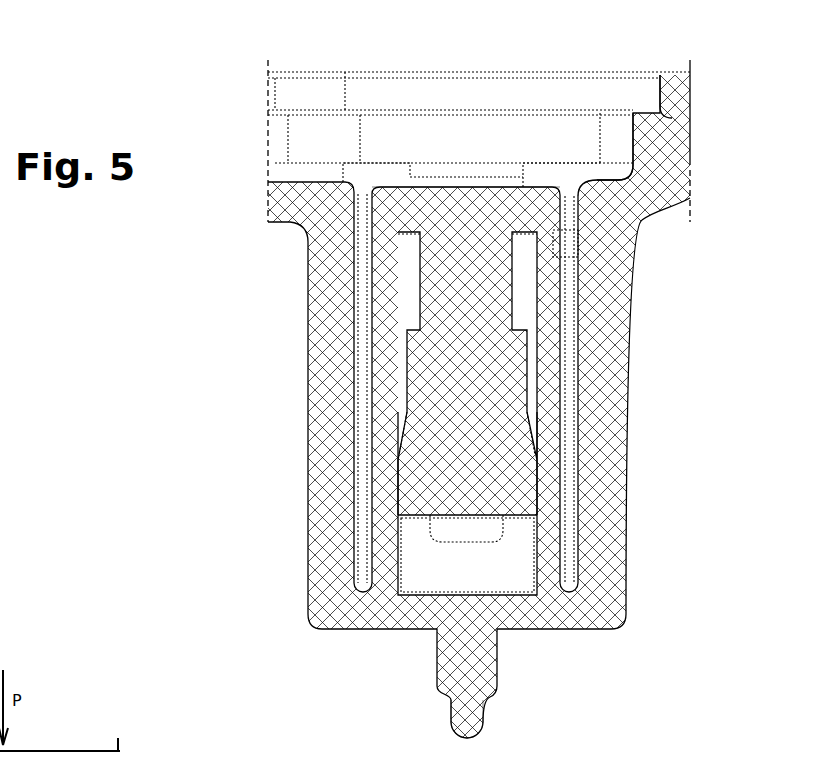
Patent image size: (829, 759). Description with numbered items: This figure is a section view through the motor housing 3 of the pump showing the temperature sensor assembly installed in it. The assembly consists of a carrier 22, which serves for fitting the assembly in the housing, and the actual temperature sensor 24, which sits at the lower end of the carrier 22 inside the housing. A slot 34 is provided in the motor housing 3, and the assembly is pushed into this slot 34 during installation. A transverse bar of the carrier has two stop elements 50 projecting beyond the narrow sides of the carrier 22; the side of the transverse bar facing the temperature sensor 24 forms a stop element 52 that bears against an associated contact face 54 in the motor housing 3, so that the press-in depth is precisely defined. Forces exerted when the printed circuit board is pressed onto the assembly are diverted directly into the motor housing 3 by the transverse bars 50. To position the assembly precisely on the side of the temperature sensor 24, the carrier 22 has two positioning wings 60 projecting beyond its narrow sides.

The motor housing 3 is at (612, 340).
The carrier 22 is at (455, 278).
The temperature sensor 24 is at (470, 717).
The slot 34 is at (520, 287).
The stop element 50 is at (537, 200).
The stop element 52 is at (562, 235).
The contact face 54 is at (548, 228).
The positioning wing 60 is at (400, 468).